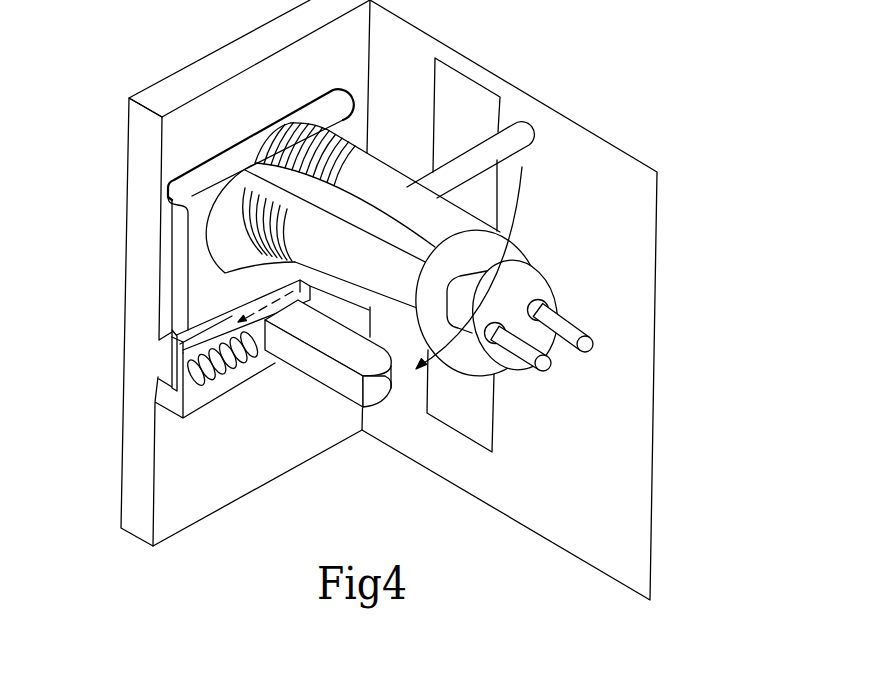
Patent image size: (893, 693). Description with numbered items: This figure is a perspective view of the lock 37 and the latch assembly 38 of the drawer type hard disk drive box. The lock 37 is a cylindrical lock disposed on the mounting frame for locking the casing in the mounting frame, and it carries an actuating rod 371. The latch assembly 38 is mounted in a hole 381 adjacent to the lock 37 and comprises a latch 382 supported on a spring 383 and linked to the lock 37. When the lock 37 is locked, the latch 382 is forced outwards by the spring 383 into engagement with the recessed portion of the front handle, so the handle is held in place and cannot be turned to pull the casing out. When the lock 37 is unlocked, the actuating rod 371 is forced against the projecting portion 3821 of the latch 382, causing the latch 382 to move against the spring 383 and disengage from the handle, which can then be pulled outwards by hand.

The lock 37 is at (439, 234).
The actuating rod 371 is at (531, 134).
The latch assembly 38 is at (175, 422).
The hole 381 is at (170, 357).
The latch 382 is at (345, 384).
The projecting portion 3821 is at (421, 417).
The spring 383 is at (177, 387).